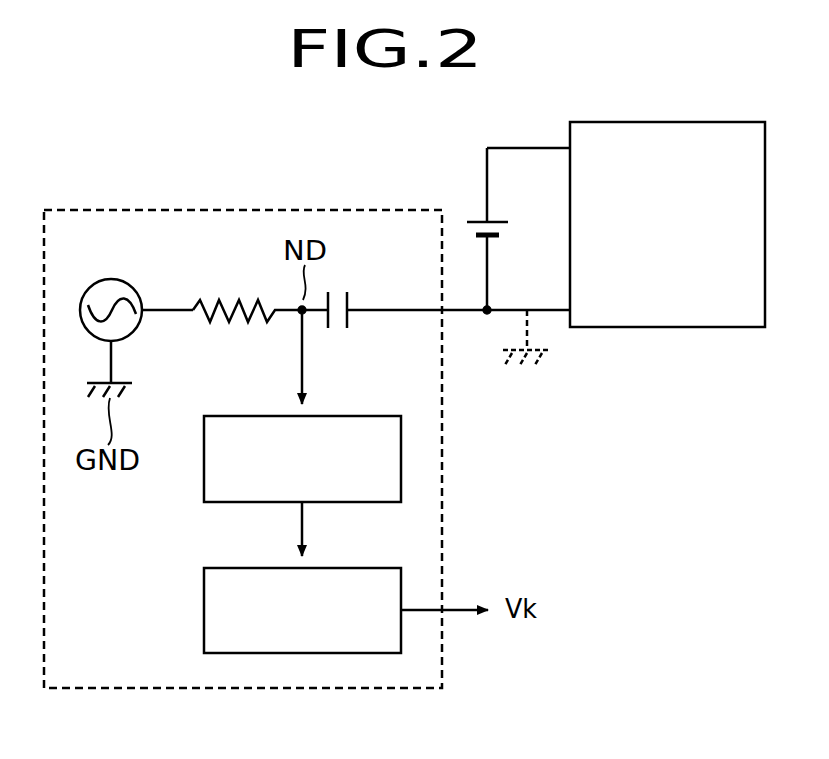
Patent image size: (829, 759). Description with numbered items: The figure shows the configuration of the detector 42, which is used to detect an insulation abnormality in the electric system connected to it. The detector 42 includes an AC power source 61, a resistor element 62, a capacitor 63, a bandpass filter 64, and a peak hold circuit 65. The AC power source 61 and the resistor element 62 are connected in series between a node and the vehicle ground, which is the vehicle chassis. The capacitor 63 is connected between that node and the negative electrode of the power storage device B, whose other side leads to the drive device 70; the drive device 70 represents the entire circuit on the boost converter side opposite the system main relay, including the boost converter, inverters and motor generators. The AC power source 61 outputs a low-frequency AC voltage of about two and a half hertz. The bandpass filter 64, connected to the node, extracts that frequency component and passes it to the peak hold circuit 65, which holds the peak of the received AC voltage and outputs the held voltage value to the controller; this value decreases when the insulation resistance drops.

The detector 42 is at (288, 210).
The AC power source 61 is at (130, 283).
The resistor element 62 is at (218, 323).
The capacitor 63 is at (349, 300).
The bandpass filter 64 is at (353, 416).
The peak hold circuit 65 is at (353, 568).
The drive device 70 is at (680, 122).
The power storage device B is at (475, 220).